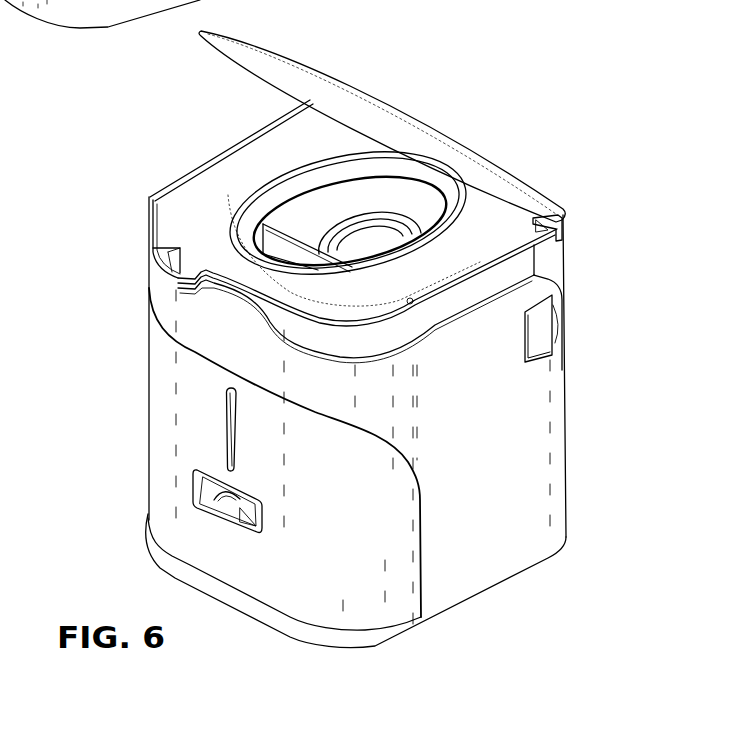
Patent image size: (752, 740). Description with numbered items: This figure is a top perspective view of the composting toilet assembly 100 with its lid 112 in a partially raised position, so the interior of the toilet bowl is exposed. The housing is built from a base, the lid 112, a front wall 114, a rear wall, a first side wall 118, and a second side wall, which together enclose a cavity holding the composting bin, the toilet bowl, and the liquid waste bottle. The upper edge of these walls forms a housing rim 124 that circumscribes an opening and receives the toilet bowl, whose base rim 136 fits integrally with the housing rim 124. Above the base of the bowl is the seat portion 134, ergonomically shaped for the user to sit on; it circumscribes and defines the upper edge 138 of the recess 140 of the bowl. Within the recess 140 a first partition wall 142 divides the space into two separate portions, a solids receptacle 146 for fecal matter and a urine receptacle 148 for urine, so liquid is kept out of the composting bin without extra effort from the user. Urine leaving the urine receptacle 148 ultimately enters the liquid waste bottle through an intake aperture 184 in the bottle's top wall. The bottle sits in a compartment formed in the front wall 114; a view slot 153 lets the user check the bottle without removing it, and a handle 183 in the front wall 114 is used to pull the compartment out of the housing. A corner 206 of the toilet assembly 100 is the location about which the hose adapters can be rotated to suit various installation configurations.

The composting toilet assembly 100 is at (336, 333).
The lid 112 is at (357, 100).
The front wall 114 is at (160, 483).
The first side wall 118 is at (495, 572).
The housing rim 124 is at (478, 274).
The seat portion 134 is at (248, 187).
The base rim 136 is at (536, 238).
The upper edge 138 is at (320, 186).
The recess 140 is at (298, 218).
The first partition wall 142 is at (274, 239).
The solids receptacle 146 is at (405, 237).
The urine receptacle 148 is at (280, 262).
The view slot 153 is at (223, 408).
The handle 183 is at (185, 500).
The intake aperture 184 is at (166, 501).
The corner 206 is at (555, 324).